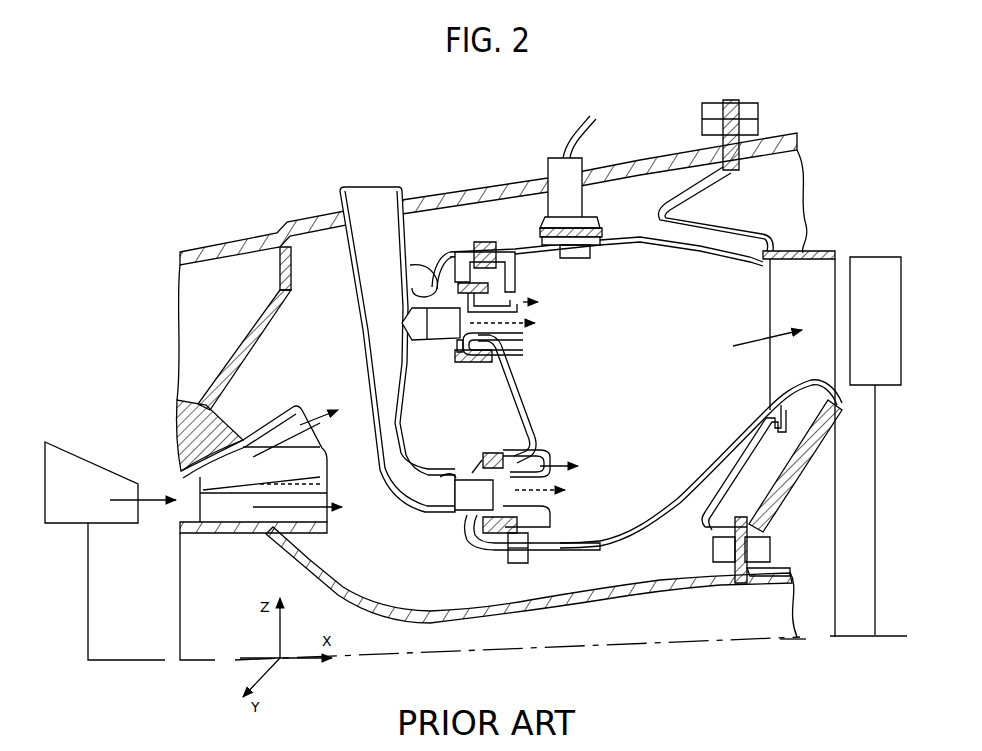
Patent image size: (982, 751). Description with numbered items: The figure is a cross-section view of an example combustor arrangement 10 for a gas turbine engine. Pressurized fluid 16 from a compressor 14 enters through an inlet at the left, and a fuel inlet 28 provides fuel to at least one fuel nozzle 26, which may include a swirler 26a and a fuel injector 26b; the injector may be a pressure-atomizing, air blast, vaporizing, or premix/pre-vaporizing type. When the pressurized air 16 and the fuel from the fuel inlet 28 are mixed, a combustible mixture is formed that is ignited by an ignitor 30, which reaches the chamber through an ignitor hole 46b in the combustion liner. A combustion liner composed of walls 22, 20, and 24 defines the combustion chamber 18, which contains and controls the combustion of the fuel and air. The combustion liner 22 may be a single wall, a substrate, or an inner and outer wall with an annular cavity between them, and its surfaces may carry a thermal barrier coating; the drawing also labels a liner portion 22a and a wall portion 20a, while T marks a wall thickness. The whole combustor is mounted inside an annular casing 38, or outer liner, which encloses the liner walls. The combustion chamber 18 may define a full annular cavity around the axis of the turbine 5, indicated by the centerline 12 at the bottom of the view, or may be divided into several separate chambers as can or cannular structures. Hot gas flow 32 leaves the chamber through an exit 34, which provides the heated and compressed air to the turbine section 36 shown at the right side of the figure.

The combustor arrangement 10 is at (866, 142).
The engine centerline axis 12 is at (650, 645).
The compressor 14 is at (91, 458).
The pressurized fluid 16 is at (150, 497).
The combustion chamber 18 is at (641, 377).
The wall 20 is at (670, 252).
The casing flange 20a is at (643, 238).
The combustion liner 22 is at (718, 463).
The liner wall portion 22a is at (652, 530).
The wall 24 is at (532, 404).
The fuel nozzle 26 is at (476, 372).
The swirler 26a is at (432, 284).
The fuel injector 26b is at (422, 362).
The fuel inlet 28 is at (369, 185).
The ignitor 30 is at (583, 160).
The turbine inlet flow 32 is at (763, 338).
The exit 34 is at (799, 445).
The turbine section 36 is at (868, 446).
The annular casing 38 is at (482, 196).
The ignitor hole 46b is at (603, 246).
The turbine 5 is at (567, 285).
The thickness T is at (718, 216).